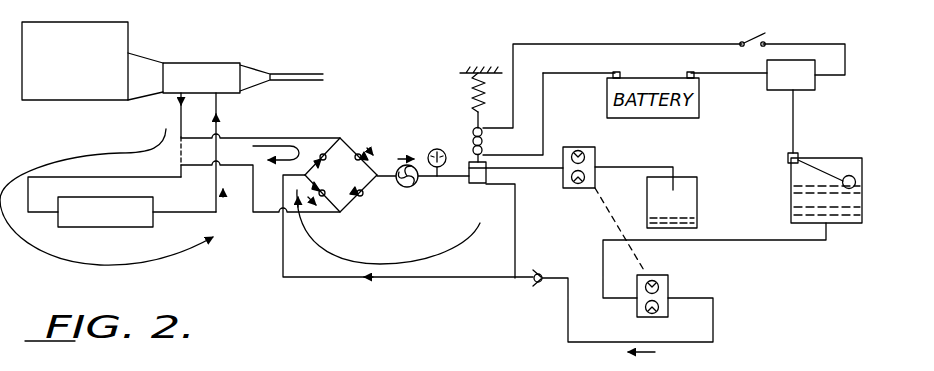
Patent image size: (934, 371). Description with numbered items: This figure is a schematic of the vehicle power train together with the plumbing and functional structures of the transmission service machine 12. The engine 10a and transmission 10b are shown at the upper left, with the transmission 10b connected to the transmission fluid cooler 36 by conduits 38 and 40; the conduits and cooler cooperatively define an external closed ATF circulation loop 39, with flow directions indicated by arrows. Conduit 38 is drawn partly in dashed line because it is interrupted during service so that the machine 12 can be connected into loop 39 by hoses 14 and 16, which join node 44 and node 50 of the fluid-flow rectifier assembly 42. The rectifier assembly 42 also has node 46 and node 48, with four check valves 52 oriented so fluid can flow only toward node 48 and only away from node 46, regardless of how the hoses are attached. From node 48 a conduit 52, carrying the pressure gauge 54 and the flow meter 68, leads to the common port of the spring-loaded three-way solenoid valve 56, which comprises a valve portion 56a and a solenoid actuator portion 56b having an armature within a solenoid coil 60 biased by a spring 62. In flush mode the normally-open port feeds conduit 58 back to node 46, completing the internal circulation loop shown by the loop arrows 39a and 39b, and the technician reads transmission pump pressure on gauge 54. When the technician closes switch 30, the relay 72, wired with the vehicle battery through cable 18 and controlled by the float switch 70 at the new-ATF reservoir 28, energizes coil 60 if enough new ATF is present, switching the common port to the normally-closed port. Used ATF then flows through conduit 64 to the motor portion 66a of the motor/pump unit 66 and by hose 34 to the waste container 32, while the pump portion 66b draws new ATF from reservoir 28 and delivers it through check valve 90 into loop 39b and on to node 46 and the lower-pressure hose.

The engine 10a is at (132, 33).
The transmission 10b is at (206, 63).
The transmission service machine 12 is at (417, 66).
The hose 14 is at (251, 140).
The hose 16 is at (253, 212).
The cable 18 is at (572, 72).
The reservoir 28 is at (863, 203).
The switch 30 is at (743, 42).
The waste container 32 is at (698, 213).
The hose 34 is at (647, 167).
The transmission fluid cooler 36 is at (118, 228).
The conduit 38 is at (181, 122).
The external closed ATF circulation loop 39 is at (50, 152).
The loop arrow 39a is at (260, 155).
The loop arrow 39b is at (446, 257).
The conduit 40 is at (216, 122).
The fluid-flow rectifier assembly 42 is at (353, 138).
The node 44 is at (340, 138).
The node 46 is at (324, 171).
The node 48 is at (374, 176).
The node 50 is at (340, 213).
The check valve 52 is at (423, 177).
The pressure gauge 54 is at (436, 149).
The three-way solenoid valve 56 is at (467, 131).
The valve portion 56a is at (475, 189).
The solenoid actuator portion 56b is at (465, 133).
The conduit 58 is at (487, 152).
The solenoid coil 60 is at (490, 133).
The spring 62 is at (488, 72).
The conduit 64 is at (552, 167).
The motor/pump unit 66 is at (599, 224).
The motor portion 66a is at (590, 147).
The pump portion 66b is at (667, 275).
The flow meter 68 is at (405, 187).
The float switch 70 is at (802, 151).
The relay 72 is at (810, 91).
The check valve 90 is at (538, 283).